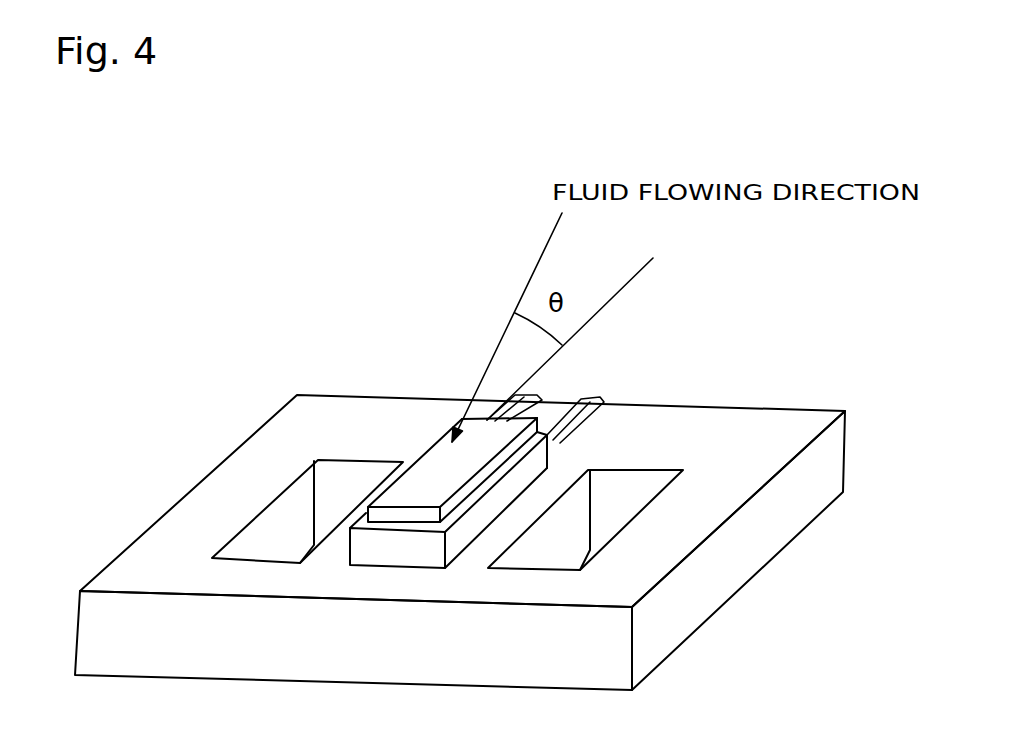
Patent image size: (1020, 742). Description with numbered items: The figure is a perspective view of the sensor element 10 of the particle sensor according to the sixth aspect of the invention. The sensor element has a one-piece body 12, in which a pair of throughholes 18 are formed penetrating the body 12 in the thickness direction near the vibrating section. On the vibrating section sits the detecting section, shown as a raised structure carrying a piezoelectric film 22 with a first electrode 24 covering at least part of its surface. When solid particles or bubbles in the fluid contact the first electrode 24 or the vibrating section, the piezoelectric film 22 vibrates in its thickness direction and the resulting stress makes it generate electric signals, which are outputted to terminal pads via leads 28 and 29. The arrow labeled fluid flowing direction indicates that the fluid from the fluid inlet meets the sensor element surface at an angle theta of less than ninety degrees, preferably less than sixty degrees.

The flow sensor device 10 is at (752, 610).
The body 12 is at (768, 426).
The throughholes 18 is at (623, 523).
The piezoelectric film 22 is at (522, 477).
The first electrode 24 is at (543, 401).
The lead 28 is at (532, 397).
The lead 29 is at (603, 399).